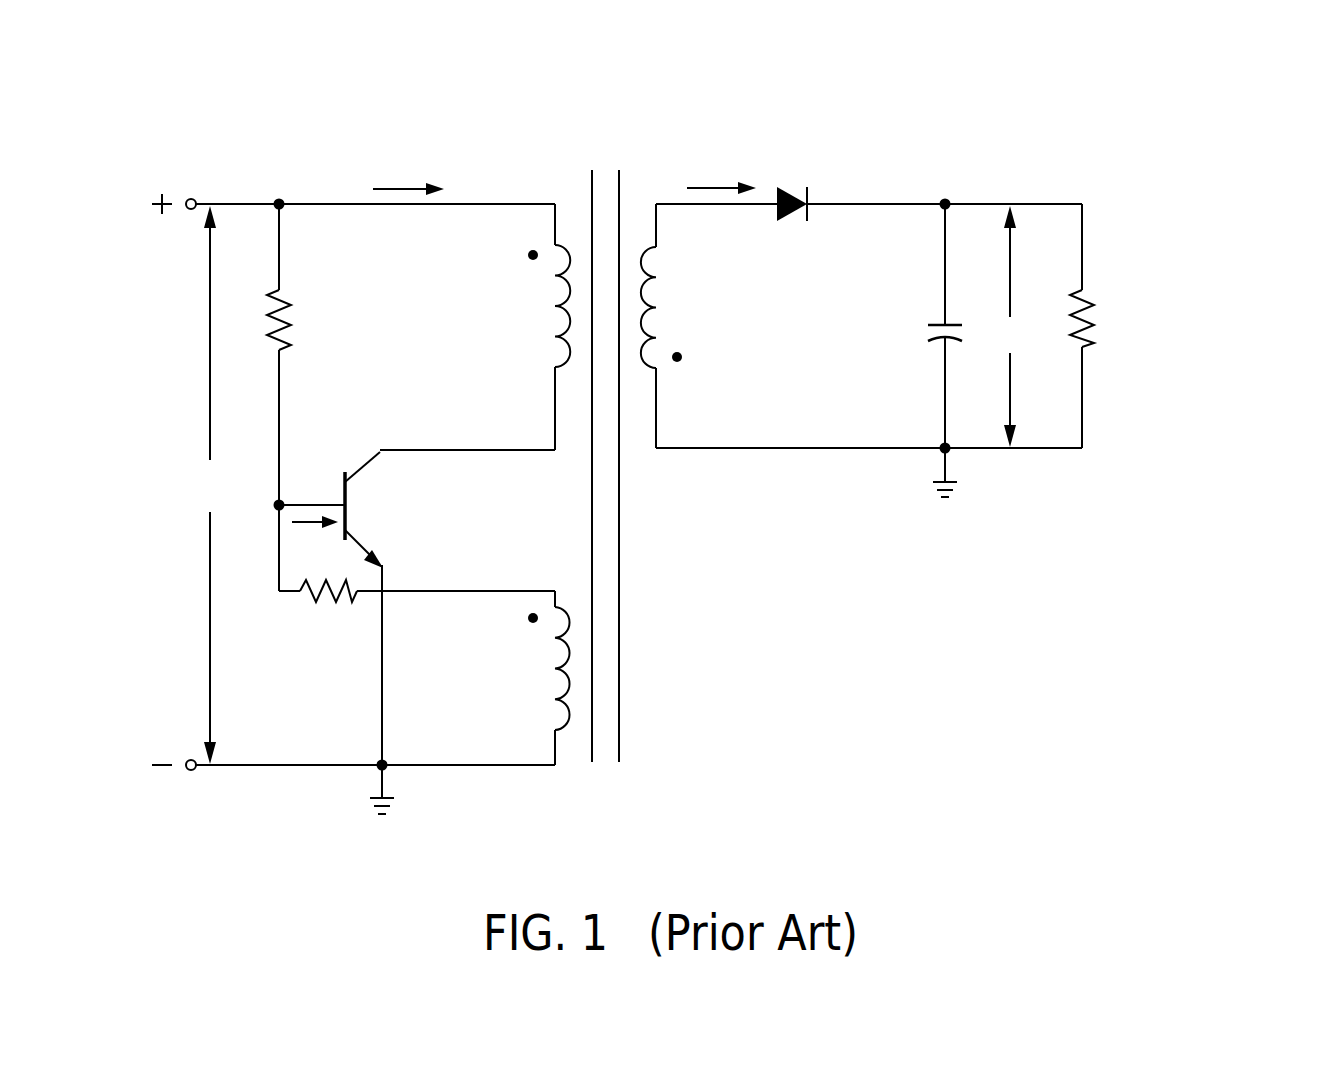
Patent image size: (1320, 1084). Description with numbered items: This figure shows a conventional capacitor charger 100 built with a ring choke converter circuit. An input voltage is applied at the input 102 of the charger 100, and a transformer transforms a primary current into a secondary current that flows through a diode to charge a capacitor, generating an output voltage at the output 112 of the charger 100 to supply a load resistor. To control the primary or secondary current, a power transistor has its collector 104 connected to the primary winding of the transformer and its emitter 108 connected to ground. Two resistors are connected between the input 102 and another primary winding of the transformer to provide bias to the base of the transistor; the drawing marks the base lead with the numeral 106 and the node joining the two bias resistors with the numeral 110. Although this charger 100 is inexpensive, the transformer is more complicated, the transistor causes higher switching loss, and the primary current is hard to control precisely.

The capacitor charger 100 is at (703, 455).
The input 102 is at (279, 202).
The collector 104 is at (366, 461).
The base of transistor Q1 106 is at (312, 502).
The emitter 108 is at (360, 540).
The base drive node 110 is at (279, 507).
The output 112 is at (945, 202).